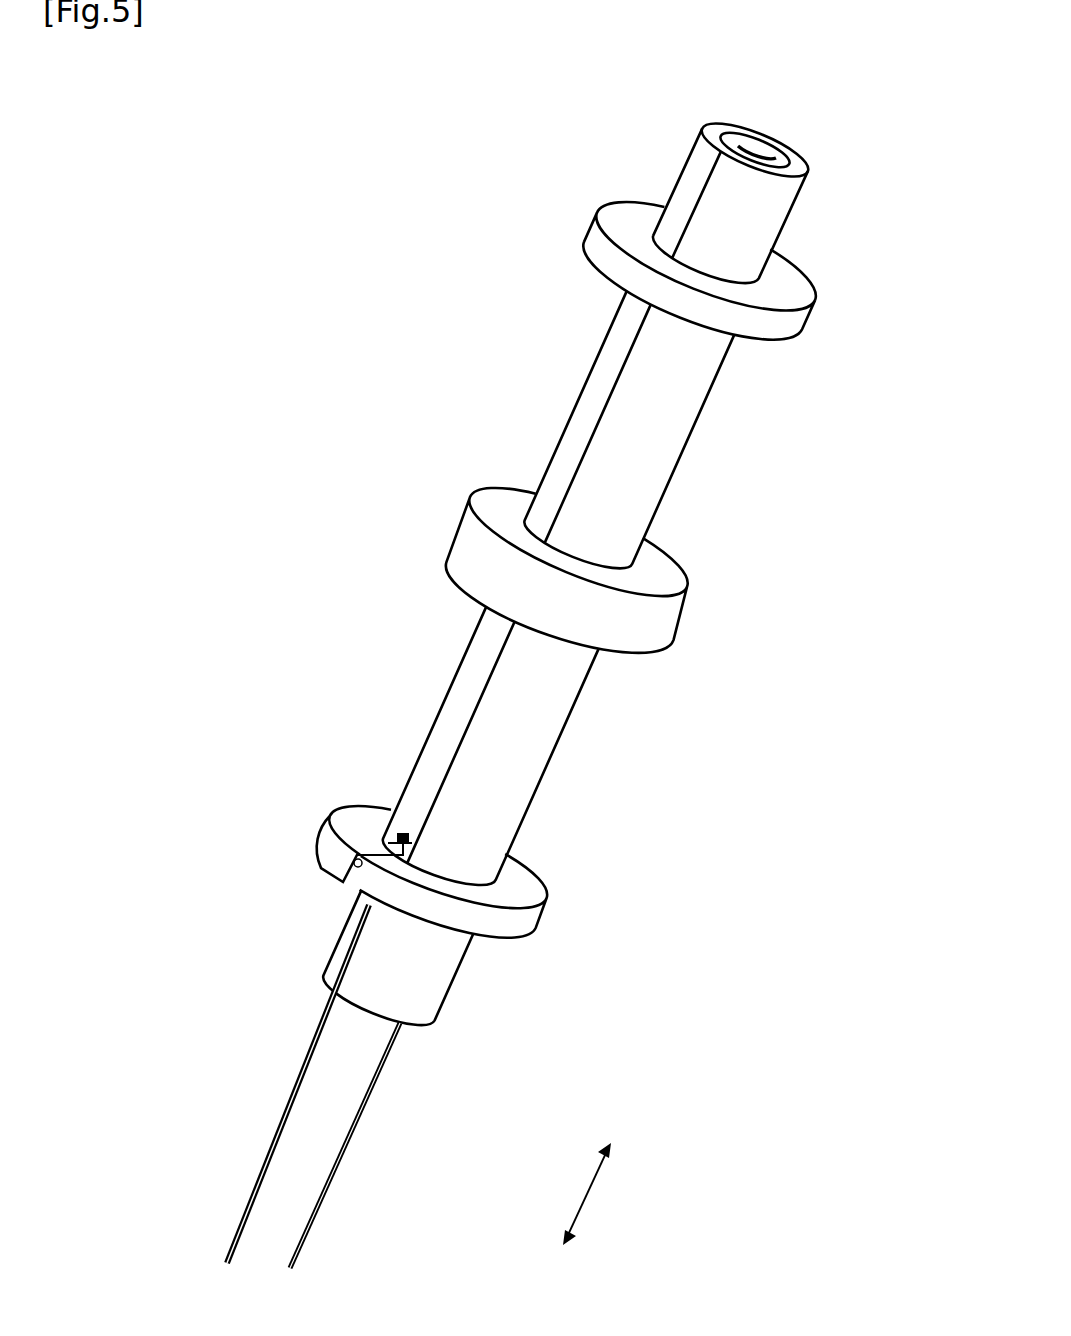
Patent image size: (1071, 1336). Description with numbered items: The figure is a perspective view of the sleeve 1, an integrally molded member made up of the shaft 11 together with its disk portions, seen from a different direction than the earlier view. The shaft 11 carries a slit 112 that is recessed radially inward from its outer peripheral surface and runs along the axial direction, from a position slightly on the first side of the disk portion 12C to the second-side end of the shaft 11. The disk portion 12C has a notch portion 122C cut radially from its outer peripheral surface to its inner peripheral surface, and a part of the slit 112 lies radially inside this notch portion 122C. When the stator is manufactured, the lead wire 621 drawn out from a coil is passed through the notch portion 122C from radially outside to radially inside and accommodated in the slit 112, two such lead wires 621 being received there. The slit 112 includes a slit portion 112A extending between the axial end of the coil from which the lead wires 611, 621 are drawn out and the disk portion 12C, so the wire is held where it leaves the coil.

The sleeve 1 is at (672, 103).
The shaft 11 is at (766, 198).
The disk portion 12C is at (530, 900).
The slit 112 is at (352, 962).
The slit portion 112A is at (368, 859).
The notch portion 122C is at (337, 810).
The lead wire 621 is at (247, 1203).
The lead wire 611 is at (315, 1210).